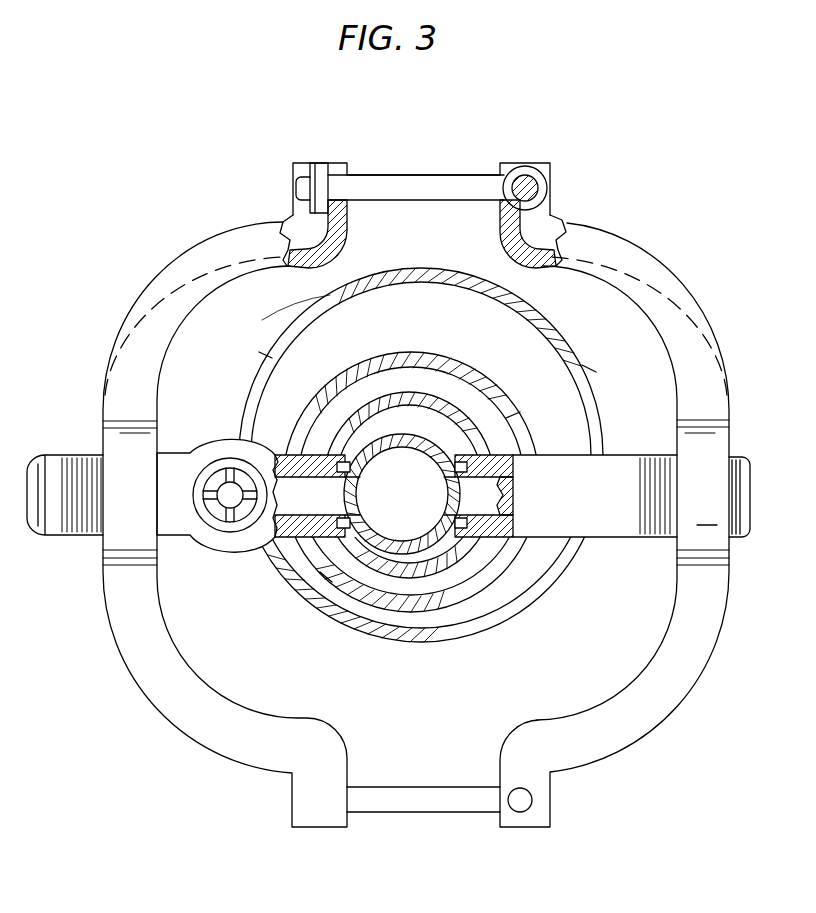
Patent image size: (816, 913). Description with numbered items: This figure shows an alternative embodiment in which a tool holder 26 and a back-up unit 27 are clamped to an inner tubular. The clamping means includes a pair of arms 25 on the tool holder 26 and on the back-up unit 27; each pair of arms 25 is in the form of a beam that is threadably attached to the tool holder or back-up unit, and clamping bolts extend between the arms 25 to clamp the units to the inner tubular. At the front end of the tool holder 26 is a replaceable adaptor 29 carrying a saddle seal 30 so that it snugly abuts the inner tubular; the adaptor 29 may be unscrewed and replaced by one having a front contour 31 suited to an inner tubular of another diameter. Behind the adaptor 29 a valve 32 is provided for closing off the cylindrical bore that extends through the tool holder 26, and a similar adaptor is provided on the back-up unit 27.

The arms 25 is at (232, 240).
The tool holder 26 is at (83, 455).
The back-up unit 27 is at (651, 455).
The replaceable adaptor 29 is at (308, 462).
The saddle seal 30 is at (362, 466).
The front contour 31 is at (366, 524).
The valve 32 is at (238, 541).